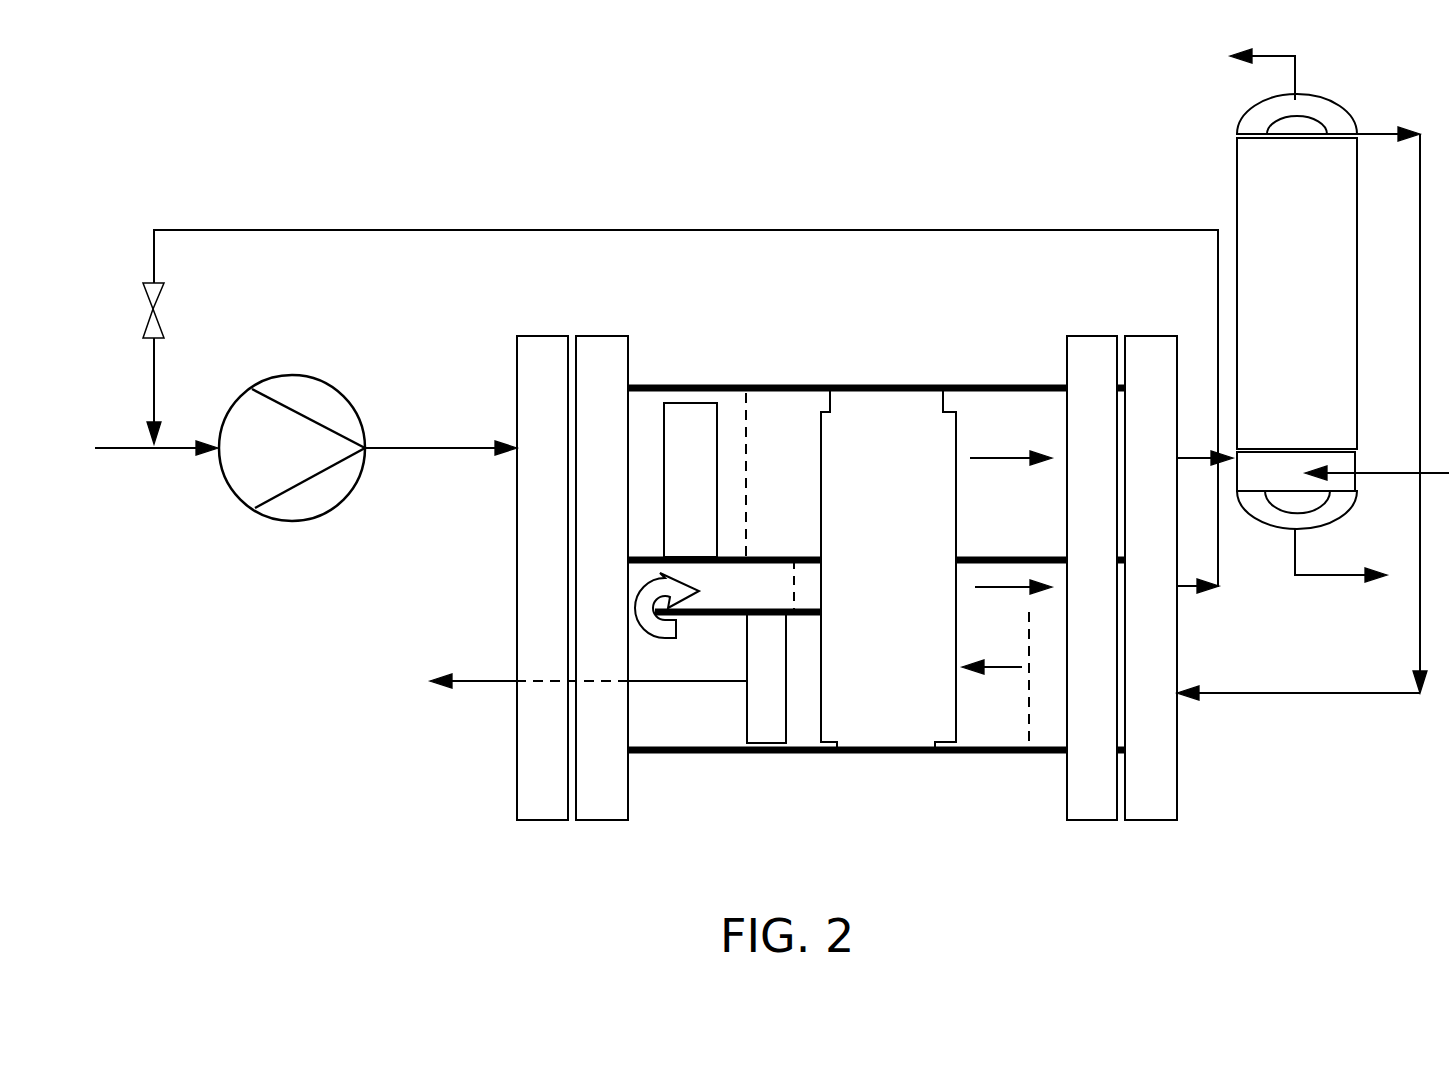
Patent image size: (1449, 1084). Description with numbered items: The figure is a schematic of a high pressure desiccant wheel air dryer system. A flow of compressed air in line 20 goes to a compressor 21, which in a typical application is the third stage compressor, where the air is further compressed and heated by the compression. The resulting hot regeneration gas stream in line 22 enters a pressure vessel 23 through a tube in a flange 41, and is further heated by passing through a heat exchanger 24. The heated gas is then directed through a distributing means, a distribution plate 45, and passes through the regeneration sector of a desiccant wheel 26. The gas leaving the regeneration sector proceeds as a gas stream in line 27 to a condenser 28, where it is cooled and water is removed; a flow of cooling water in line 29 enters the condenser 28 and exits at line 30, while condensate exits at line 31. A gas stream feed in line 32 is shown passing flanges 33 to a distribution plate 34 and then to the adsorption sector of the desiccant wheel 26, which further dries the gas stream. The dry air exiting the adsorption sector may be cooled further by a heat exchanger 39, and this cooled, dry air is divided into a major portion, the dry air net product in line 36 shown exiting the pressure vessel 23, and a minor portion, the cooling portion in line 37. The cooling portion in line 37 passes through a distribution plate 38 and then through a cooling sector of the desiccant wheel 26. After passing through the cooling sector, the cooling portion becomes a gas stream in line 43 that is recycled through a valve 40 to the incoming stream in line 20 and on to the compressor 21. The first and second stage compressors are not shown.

The line 20 is at (123, 450).
The compressor 21 is at (292, 448).
The line 22 is at (390, 448).
The pressure vessel 23 is at (697, 758).
The heat exchanger 24 is at (690, 480).
The desiccant wheel 26 is at (888, 569).
The line 27 is at (987, 456).
The condenser 28 is at (1297, 311).
The line 29 is at (1370, 470).
The line 30 is at (1297, 80).
The line 31 is at (1318, 577).
The line 32 is at (1307, 697).
The flanges 33 is at (1093, 806).
The distribution plate 34 is at (1030, 728).
The line 36 is at (713, 685).
The line 37 is at (700, 588).
The distribution plate 38 is at (796, 568).
The heat exchanger 39 is at (988, 586).
The valve 40 is at (158, 312).
The flange 41 is at (595, 806).
The line 43 is at (780, 231).
The distribution plate 45 is at (747, 468).